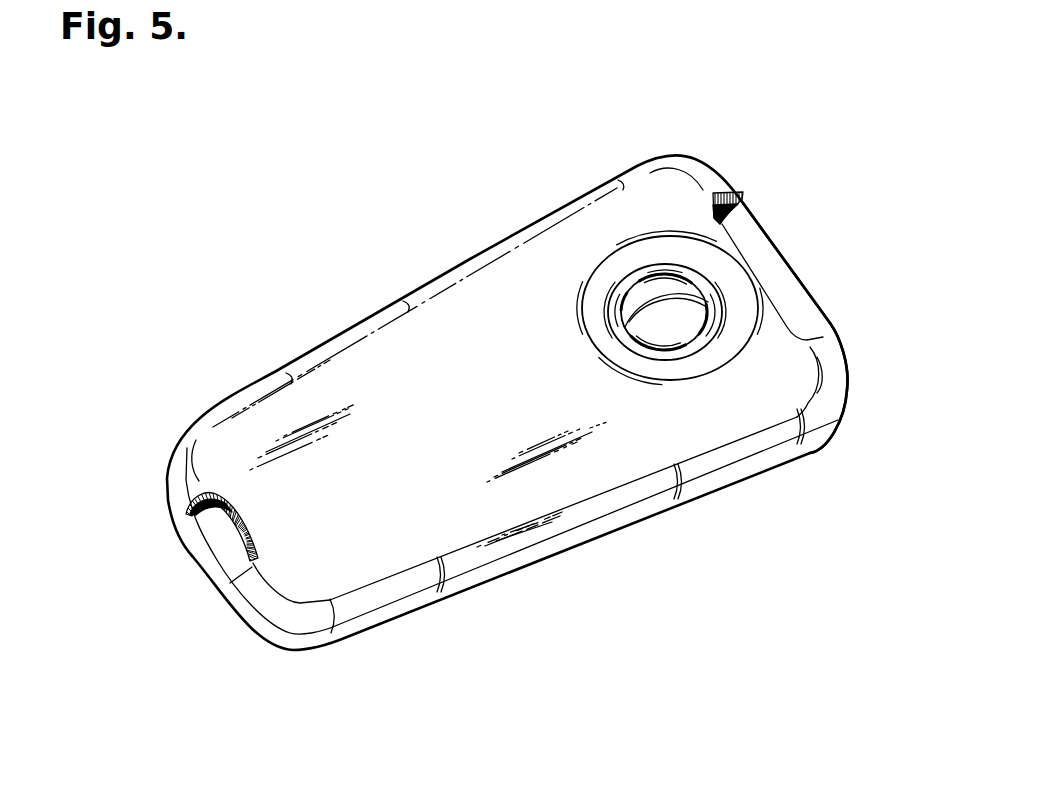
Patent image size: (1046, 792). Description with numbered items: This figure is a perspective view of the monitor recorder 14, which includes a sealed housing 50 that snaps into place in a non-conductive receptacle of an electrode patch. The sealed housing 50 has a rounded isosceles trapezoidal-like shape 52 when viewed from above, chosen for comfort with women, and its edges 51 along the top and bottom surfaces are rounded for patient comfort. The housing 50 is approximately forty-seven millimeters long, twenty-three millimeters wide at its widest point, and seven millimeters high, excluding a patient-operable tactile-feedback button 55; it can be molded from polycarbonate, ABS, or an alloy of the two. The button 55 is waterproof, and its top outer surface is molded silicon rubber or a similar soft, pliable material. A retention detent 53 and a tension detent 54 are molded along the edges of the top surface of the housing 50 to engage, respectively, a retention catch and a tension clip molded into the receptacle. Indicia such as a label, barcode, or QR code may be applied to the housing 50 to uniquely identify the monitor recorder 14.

The monitor recorder 14 is at (320, 228).
The sealed housing 50 is at (640, 517).
The edges 51 is at (840, 442).
The rounded isosceles trapezoidal-like shape 52 is at (511, 366).
The retention detent 53 is at (763, 248).
The tension detent 54 is at (210, 533).
The patient-operable tactile-feedback button 55 is at (648, 263).